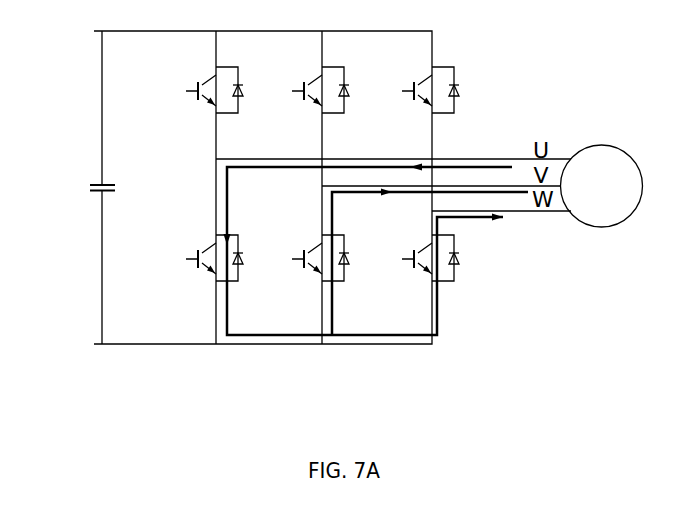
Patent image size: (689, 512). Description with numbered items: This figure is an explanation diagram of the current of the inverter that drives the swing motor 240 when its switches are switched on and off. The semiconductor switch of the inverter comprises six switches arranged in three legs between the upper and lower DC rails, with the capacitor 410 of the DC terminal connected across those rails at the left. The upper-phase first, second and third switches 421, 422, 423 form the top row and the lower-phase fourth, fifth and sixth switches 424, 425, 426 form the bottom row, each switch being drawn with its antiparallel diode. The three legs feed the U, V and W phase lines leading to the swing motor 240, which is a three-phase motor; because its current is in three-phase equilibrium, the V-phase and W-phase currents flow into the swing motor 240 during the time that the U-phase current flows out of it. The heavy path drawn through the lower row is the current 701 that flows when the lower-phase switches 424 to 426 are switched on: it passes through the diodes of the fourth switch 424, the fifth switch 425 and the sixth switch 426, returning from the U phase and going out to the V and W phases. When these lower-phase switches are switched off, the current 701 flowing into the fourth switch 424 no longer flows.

The capacitor 410 is at (93, 183).
The swing motor 240 is at (602, 144).
The switch SW1 421 is at (188, 93).
The switch SW2 422 is at (294, 93).
The switch SW3 423 is at (404, 93).
The switch SW4 424 is at (188, 261).
The switch SW5 425 is at (294, 261).
The switch SW6 426 is at (404, 261).
The current 701 is at (378, 345).